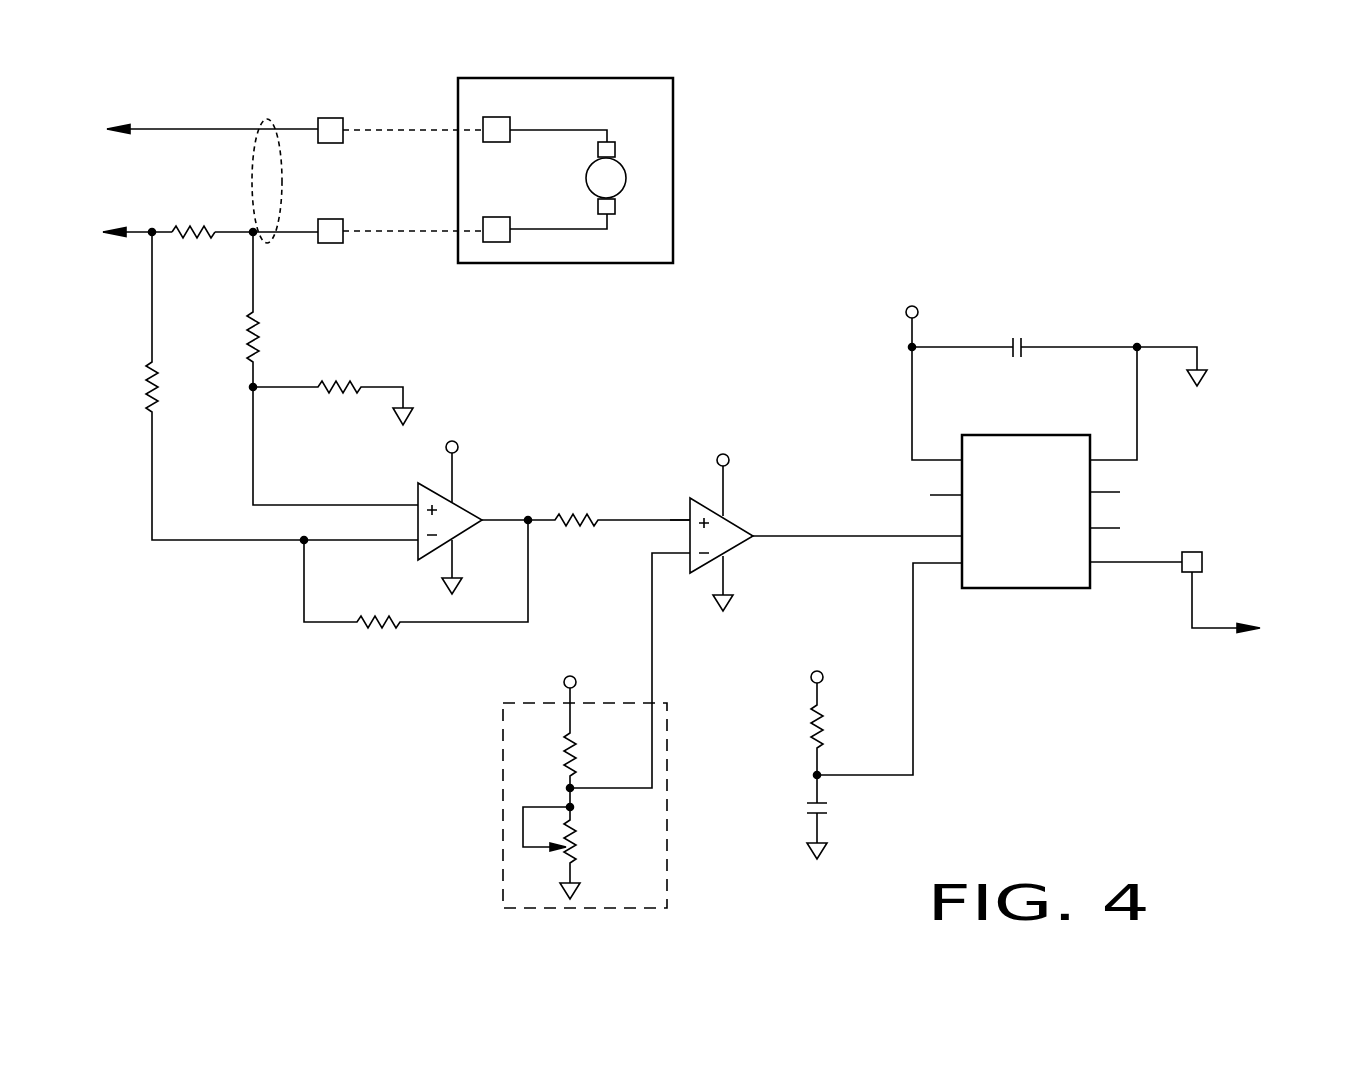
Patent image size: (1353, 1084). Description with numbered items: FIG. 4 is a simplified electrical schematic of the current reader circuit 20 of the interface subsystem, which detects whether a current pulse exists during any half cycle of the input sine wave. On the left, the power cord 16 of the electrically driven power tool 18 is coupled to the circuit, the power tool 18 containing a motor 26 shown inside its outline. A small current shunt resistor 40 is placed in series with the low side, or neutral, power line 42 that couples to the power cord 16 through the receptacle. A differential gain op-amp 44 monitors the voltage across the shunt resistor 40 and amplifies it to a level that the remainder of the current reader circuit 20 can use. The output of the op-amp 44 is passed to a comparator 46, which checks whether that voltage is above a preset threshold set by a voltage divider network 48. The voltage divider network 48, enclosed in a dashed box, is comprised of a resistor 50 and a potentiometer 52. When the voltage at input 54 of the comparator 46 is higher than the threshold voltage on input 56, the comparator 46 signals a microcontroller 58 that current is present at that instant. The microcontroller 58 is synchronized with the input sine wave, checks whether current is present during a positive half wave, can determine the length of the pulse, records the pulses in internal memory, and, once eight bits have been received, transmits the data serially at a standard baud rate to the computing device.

The power cord 16 is at (265, 122).
The power tool 18 is at (565, 191).
The current reader circuit 20 is at (762, 305).
The motor 26 is at (615, 183).
The current shunt resistor 40 is at (193, 224).
The low side (neutral) power line 42 is at (148, 240).
The differential gain op-amp 44 is at (447, 507).
The comparator 46 is at (704, 606).
The voltage divider network 48 is at (622, 774).
The resistor 50 is at (562, 757).
The potentiometer 52 is at (589, 842).
The input of the comparator 54 is at (686, 510).
The input of the comparator 56 is at (683, 538).
The microcontroller 58 is at (1017, 580).